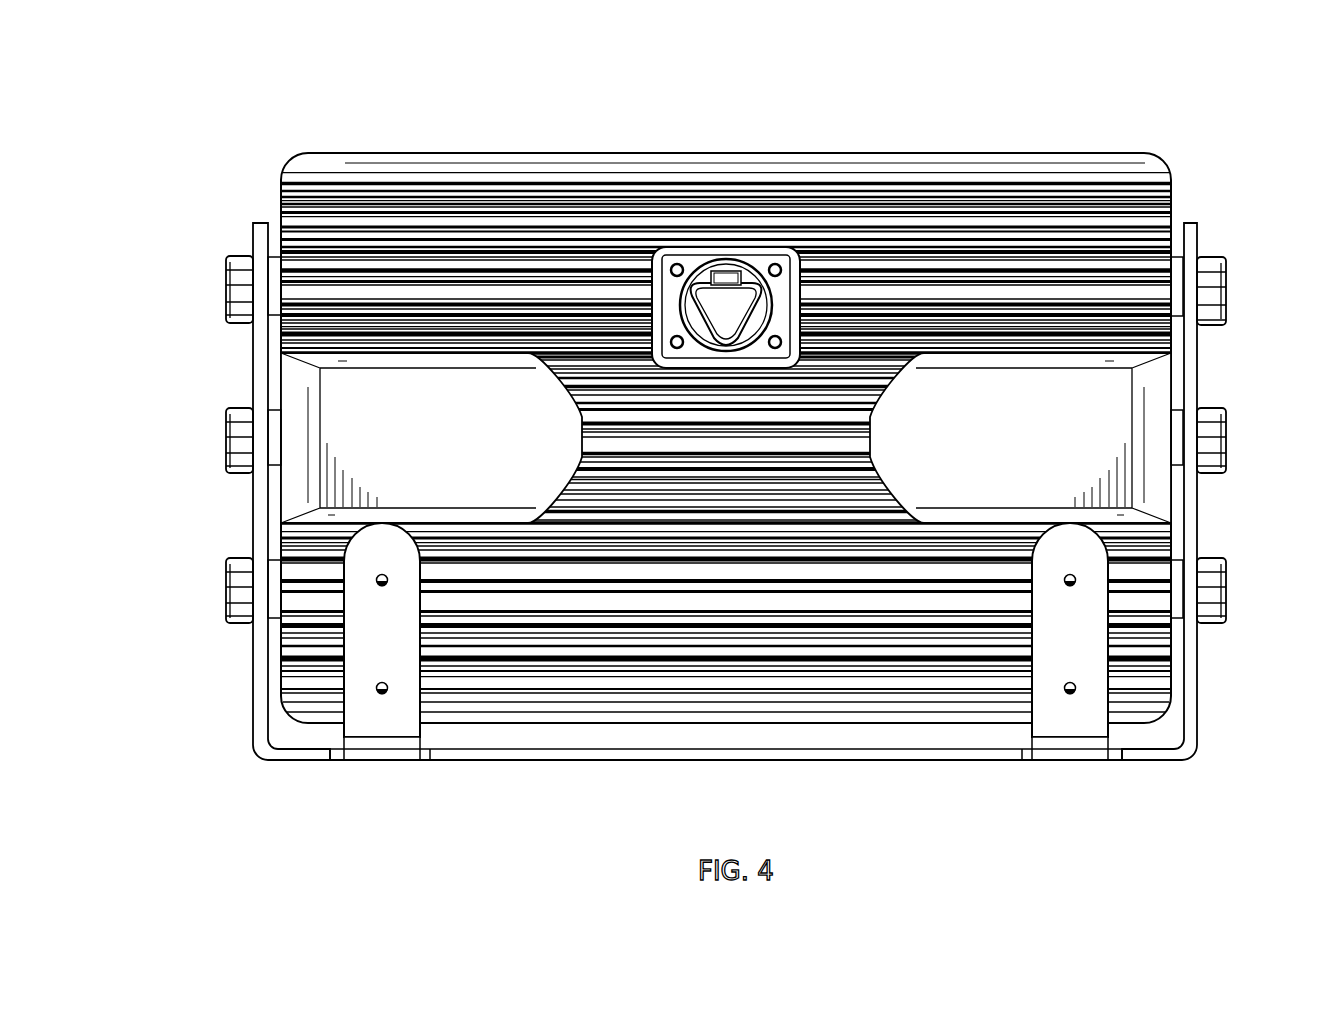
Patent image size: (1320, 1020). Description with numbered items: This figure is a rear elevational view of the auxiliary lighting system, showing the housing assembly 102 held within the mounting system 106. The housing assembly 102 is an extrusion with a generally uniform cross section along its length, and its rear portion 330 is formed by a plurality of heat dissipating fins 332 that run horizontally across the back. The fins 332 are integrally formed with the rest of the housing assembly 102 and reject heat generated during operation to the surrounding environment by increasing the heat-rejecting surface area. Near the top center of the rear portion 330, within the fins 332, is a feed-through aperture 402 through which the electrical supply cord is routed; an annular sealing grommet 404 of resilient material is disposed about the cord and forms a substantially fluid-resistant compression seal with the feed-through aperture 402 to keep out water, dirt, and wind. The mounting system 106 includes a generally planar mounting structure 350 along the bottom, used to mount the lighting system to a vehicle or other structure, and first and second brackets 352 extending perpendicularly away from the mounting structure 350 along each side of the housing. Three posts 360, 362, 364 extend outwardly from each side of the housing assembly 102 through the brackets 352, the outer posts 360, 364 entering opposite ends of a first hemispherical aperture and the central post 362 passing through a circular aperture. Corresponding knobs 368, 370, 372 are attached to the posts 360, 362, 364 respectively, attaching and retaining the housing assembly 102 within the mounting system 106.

The housing assembly 102 is at (1112, 158).
The mounting system 106 is at (1210, 710).
The rear portion 330 is at (877, 131).
The heat dissipating fins 332 is at (993, 240).
The mounting structure 350 is at (820, 762).
The brackets 352 is at (262, 720).
The outer post 360 is at (273, 268).
The central post 362 is at (272, 415).
The outer post 364 is at (278, 607).
The knob 368 is at (235, 292).
The knob 370 is at (236, 419).
The knob 372 is at (240, 580).
The feed-through aperture 402 is at (760, 275).
The annular sealing grommet 404 is at (700, 270).